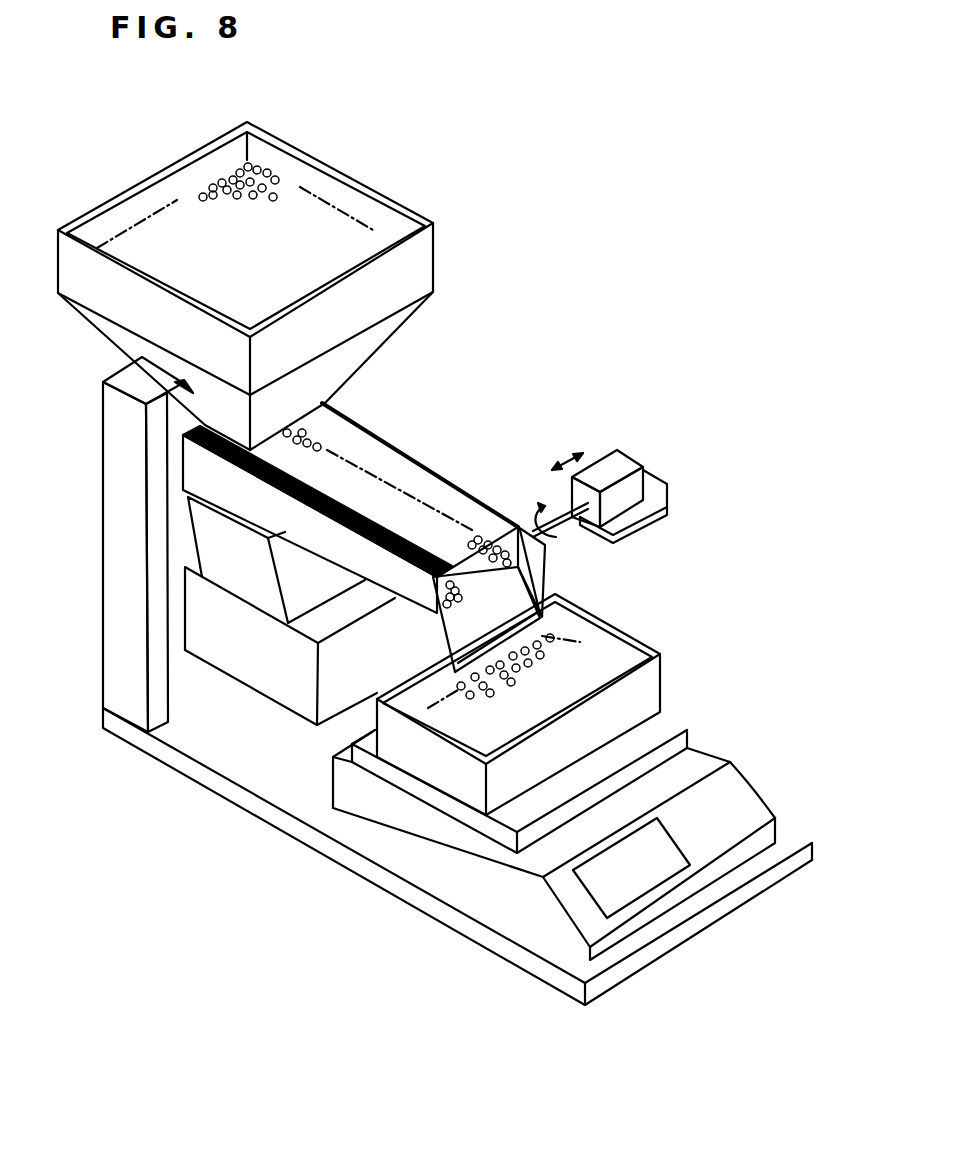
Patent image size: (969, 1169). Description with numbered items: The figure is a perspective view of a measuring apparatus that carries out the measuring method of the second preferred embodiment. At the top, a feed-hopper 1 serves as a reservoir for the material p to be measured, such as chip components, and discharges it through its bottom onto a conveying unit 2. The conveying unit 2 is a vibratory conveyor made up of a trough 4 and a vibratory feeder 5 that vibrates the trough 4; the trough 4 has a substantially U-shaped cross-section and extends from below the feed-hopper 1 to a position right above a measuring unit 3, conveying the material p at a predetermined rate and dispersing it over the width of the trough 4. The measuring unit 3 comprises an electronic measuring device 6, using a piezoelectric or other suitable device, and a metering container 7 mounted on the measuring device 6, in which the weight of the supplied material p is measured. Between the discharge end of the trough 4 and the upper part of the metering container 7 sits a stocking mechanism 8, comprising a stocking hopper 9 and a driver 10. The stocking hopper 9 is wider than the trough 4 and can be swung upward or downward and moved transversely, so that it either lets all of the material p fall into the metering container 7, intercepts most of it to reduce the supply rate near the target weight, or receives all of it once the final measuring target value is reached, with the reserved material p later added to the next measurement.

The feed-hopper 1 is at (128, 188).
The conveying unit 2 is at (403, 447).
The measuring unit 3 is at (724, 734).
The trough 4 is at (352, 427).
The vibratory feeder 5 is at (200, 540).
The measuring device 6 is at (452, 865).
The metering container 7 is at (656, 691).
The stocking mechanism 8 is at (556, 570).
The stocking hopper 9 is at (432, 633).
The driver 10 is at (617, 463).
The material p is at (270, 167).